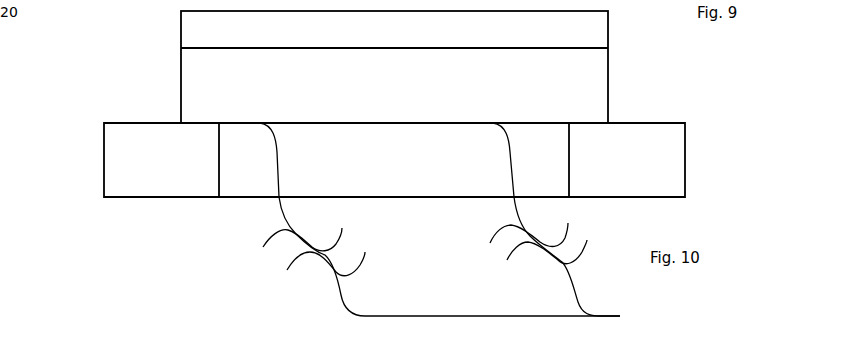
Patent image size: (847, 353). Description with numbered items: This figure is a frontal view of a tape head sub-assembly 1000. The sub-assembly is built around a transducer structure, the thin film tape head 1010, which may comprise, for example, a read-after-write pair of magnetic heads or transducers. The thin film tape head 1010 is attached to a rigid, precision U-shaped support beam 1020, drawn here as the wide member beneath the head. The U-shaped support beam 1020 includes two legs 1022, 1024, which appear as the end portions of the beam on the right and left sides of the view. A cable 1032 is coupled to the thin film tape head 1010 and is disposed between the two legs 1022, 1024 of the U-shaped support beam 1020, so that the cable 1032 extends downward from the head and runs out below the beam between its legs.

The tape head sub-assembly 1000 is at (700, 92).
The thin film tape head 1010 is at (563, 72).
The U-shaped support beam 1020 is at (258, 143).
The leg 1022 is at (648, 183).
The leg 1024 is at (158, 182).
The cable 1032 is at (372, 288).